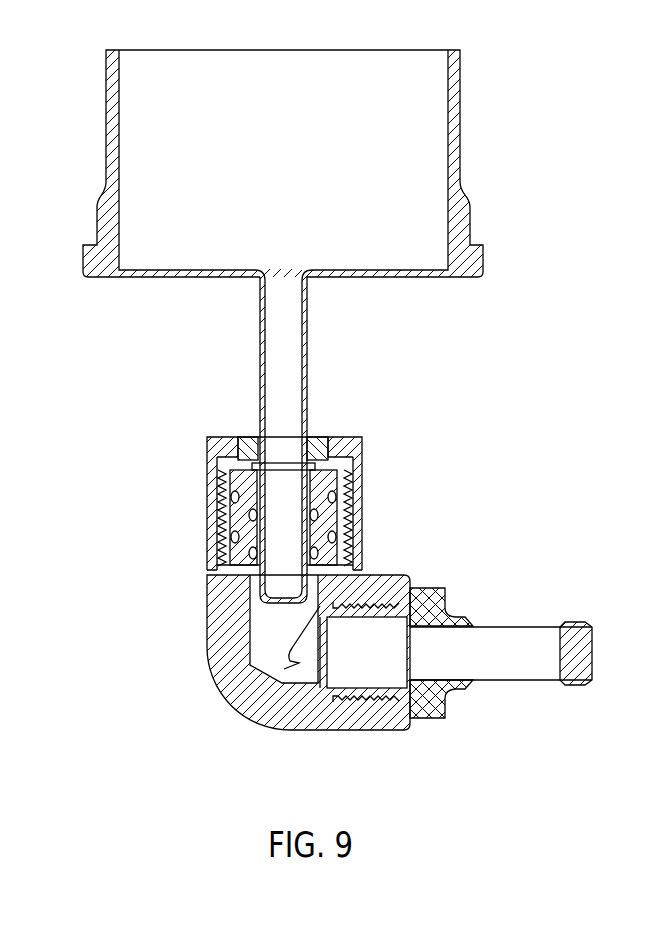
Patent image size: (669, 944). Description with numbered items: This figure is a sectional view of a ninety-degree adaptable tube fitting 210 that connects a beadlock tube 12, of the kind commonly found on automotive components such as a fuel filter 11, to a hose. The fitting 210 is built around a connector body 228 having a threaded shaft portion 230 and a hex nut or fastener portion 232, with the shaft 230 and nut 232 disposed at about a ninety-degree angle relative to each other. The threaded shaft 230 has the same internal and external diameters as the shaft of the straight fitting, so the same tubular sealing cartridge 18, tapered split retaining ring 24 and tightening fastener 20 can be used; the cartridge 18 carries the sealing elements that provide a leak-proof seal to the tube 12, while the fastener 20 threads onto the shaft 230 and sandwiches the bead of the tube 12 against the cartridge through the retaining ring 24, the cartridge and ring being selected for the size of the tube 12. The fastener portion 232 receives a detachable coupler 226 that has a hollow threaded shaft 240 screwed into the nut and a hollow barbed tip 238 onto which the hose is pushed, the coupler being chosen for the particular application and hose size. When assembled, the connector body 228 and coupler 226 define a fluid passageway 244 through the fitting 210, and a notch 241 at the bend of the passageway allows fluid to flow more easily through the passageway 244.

The fuel filter 11 is at (433, 135).
The tube 12 is at (307, 333).
The fastener 20 is at (215, 442).
The retaining ring 24 is at (338, 447).
The sealing cartridge 18 is at (325, 477).
The threaded shaft portion 230 is at (340, 520).
The fastener portion 232 is at (385, 575).
The notch 241 is at (293, 647).
The connector body 228 is at (212, 662).
The hollow threaded shaft 240 is at (352, 700).
The detachable coupler 226 is at (442, 685).
The hollow barbed tip 238 is at (565, 622).
The fluid passageway 244 is at (582, 662).
The fitting 210 is at (142, 483).